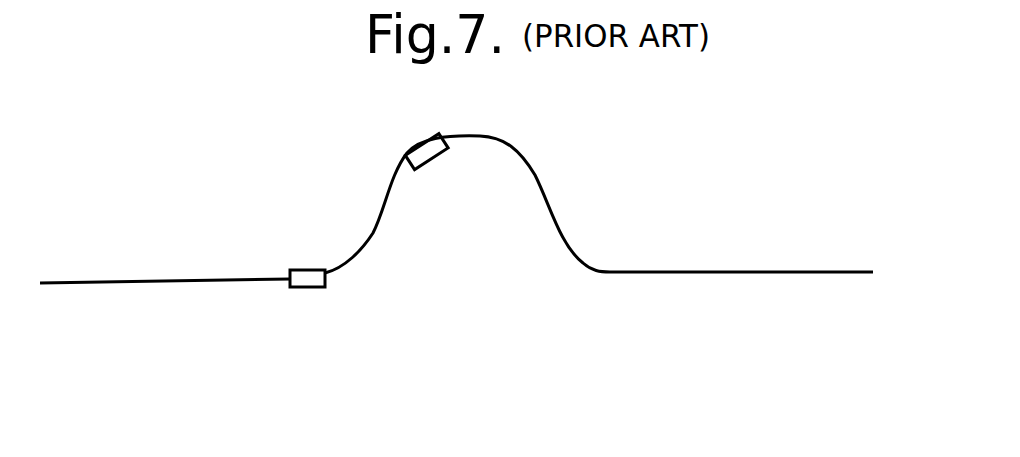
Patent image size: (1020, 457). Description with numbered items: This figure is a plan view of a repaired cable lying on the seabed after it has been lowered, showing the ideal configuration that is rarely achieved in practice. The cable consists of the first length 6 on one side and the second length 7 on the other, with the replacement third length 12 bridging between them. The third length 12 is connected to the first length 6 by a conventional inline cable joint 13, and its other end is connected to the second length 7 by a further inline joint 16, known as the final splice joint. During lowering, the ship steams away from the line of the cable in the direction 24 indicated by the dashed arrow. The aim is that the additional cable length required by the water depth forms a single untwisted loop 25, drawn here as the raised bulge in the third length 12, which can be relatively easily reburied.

The first length 6 is at (127, 281).
The second length 7 is at (790, 270).
The third length 12 is at (377, 227).
The inline cable joint 13 is at (300, 268).
The inline joint 16 is at (420, 143).
The direction 24 is at (650, 110).
The single untwisted loop 25 is at (533, 148).